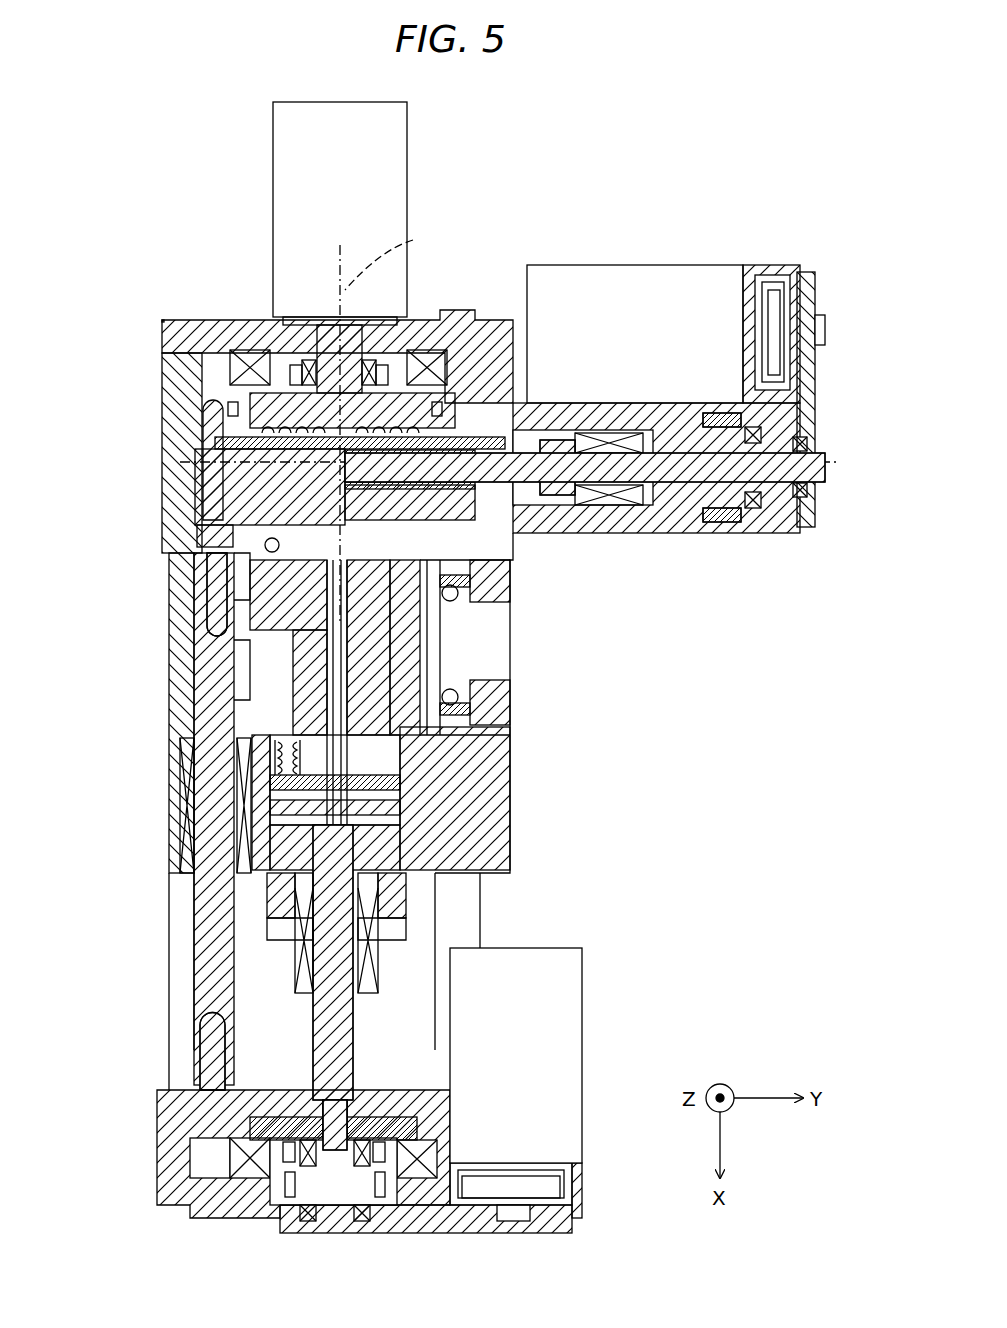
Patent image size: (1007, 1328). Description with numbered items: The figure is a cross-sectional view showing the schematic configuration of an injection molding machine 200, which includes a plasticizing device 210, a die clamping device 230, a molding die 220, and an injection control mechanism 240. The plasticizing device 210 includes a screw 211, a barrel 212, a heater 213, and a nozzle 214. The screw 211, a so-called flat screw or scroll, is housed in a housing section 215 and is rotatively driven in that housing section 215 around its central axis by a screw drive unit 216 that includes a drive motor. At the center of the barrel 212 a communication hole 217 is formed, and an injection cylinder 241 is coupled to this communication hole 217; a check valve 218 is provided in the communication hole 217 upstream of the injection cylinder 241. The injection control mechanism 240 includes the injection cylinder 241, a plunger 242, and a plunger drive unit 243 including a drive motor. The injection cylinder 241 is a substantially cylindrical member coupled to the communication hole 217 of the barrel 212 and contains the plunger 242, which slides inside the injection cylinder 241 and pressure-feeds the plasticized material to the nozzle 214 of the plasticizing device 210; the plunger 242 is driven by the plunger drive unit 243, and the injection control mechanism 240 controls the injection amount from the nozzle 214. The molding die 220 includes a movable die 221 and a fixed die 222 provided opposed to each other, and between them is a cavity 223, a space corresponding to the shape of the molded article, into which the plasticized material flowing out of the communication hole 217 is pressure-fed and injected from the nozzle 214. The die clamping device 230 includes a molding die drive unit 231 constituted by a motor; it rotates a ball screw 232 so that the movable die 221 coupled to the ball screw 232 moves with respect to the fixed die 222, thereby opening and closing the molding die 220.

The injection molding machine 200 is at (150, 177).
The plasticizing device 210 is at (478, 246).
The screw 211 is at (247, 400).
The barrel 212 is at (300, 415).
The heater 213 is at (330, 456).
The nozzle 214 is at (300, 585).
The housing section 215 is at (242, 398).
The screw drive unit 216 is at (273, 262).
The communication hole 217 is at (216, 535).
The check valve 218 is at (330, 487).
The molding die 220 is at (580, 608).
The movable die 221 is at (417, 653).
The fixed die 222 is at (417, 615).
The cavity 223 is at (332, 648).
The die clamping device 230 is at (538, 936).
The molding die drive unit 231 is at (582, 1055).
The ball screw 232 is at (330, 1005).
The injection control mechanism 240 is at (762, 556).
The injection cylinder 241 is at (507, 508).
The plunger 242 is at (667, 474).
The plunger drive unit 243 is at (637, 280).